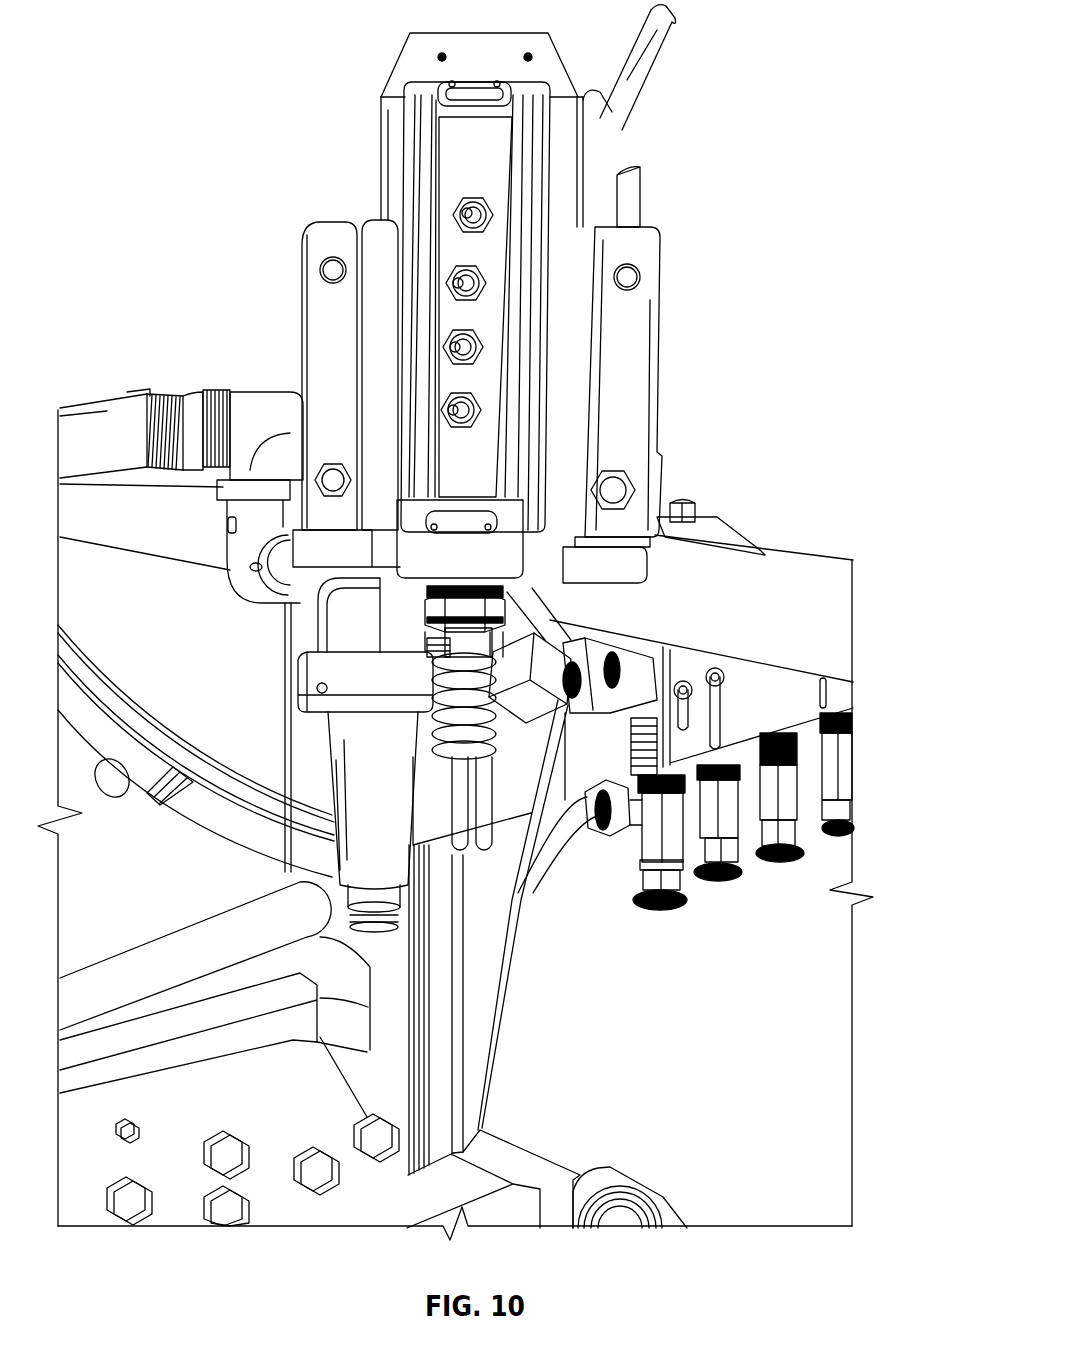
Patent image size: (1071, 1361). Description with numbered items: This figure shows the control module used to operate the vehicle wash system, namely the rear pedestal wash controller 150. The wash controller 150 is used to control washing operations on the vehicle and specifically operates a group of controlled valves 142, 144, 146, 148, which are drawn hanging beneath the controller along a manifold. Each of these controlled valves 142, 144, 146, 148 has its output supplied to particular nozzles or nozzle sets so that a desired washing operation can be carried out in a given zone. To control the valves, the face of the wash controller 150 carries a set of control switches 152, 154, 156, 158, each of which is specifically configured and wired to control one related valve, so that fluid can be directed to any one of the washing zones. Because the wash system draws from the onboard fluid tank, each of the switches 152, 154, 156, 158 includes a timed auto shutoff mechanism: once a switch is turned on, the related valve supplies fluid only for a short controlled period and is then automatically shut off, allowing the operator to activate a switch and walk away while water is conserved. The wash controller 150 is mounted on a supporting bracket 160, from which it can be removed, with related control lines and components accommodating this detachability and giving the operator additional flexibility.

The controlled valve 142 is at (643, 867).
The controlled valve 144 is at (733, 838).
The controlled valve 146 is at (797, 813).
The controlled valve 148 is at (847, 797).
The rear pedestal wash controller 150 is at (470, 172).
The control switch 152 is at (480, 216).
The control switch 154 is at (492, 283).
The control switch 156 is at (490, 347).
The control switch 158 is at (486, 422).
The supporting bracket 160 is at (568, 136).